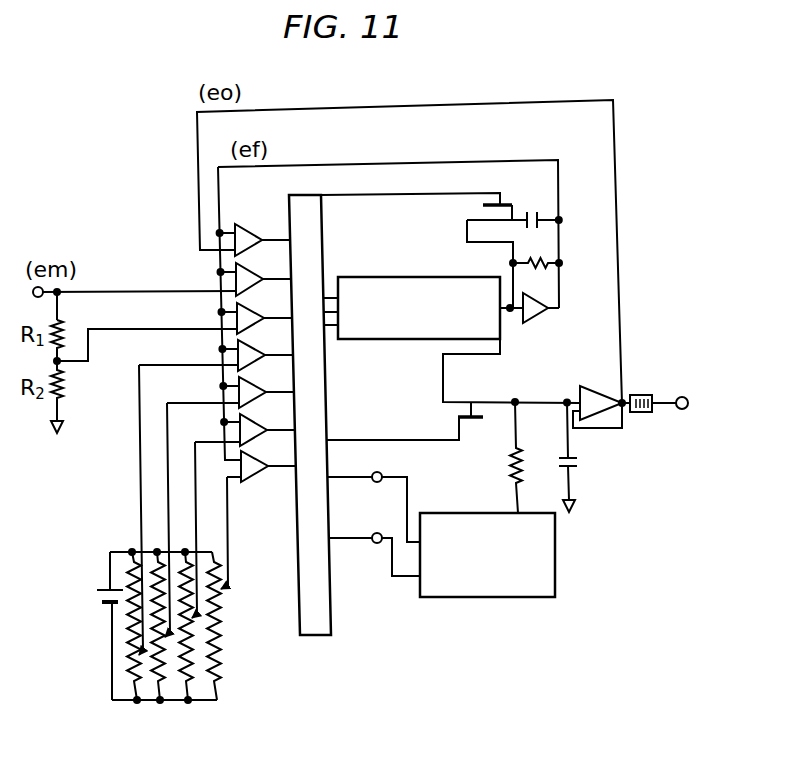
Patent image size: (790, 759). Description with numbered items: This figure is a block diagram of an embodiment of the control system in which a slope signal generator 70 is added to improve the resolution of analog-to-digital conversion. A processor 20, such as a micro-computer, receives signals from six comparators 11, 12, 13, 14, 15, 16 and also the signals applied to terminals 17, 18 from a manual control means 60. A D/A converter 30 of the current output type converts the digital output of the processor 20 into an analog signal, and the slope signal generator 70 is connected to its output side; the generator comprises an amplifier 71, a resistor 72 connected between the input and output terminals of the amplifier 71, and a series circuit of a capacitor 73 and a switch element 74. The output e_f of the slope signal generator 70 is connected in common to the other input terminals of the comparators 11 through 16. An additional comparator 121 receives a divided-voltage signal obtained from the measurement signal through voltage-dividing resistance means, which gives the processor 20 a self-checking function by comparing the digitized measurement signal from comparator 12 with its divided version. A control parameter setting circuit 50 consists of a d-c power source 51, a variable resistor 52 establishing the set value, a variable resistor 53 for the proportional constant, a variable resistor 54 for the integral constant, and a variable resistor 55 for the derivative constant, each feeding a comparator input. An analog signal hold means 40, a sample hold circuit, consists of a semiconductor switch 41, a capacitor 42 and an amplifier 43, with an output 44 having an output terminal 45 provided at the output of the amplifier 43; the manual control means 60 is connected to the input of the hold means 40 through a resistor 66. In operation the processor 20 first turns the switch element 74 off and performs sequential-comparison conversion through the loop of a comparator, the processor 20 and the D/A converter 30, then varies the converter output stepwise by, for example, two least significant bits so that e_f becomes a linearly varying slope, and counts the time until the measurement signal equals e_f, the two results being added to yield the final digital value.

The comparator 11 is at (253, 232).
The comparator 12 is at (254, 270).
The comparator 121 is at (261, 304).
The comparator 13 is at (256, 347).
The comparator 14 is at (257, 384).
The comparator 15 is at (258, 421).
The comparator 16 is at (259, 457).
The terminal 17 is at (376, 471).
The terminal 18 is at (377, 532).
The processor 20 is at (313, 637).
The D/A converter 30 is at (373, 339).
The analog signal hold means 40 is at (557, 395).
The semiconductor switch 41 is at (469, 411).
The capacitor 42 is at (578, 463).
The amplifier 43 is at (583, 389).
The output 44 is at (640, 413).
The output terminal 45 is at (681, 396).
The control parameter setting circuit 50 is at (174, 650).
The d-c power source 51 is at (96, 593).
The variable resistor 52 is at (130, 680).
The variable resistor 53 is at (152, 678).
The variable resistor 54 is at (181, 680).
The variable resistor 55 is at (204, 677).
The manual control means 60 is at (500, 598).
The resistor 66 is at (512, 463).
The slope signal generator 70 is at (595, 265).
The amplifier 71 is at (536, 321).
The resistor 72 is at (536, 276).
The capacitor 73 is at (531, 212).
The switch element 74 is at (493, 202).